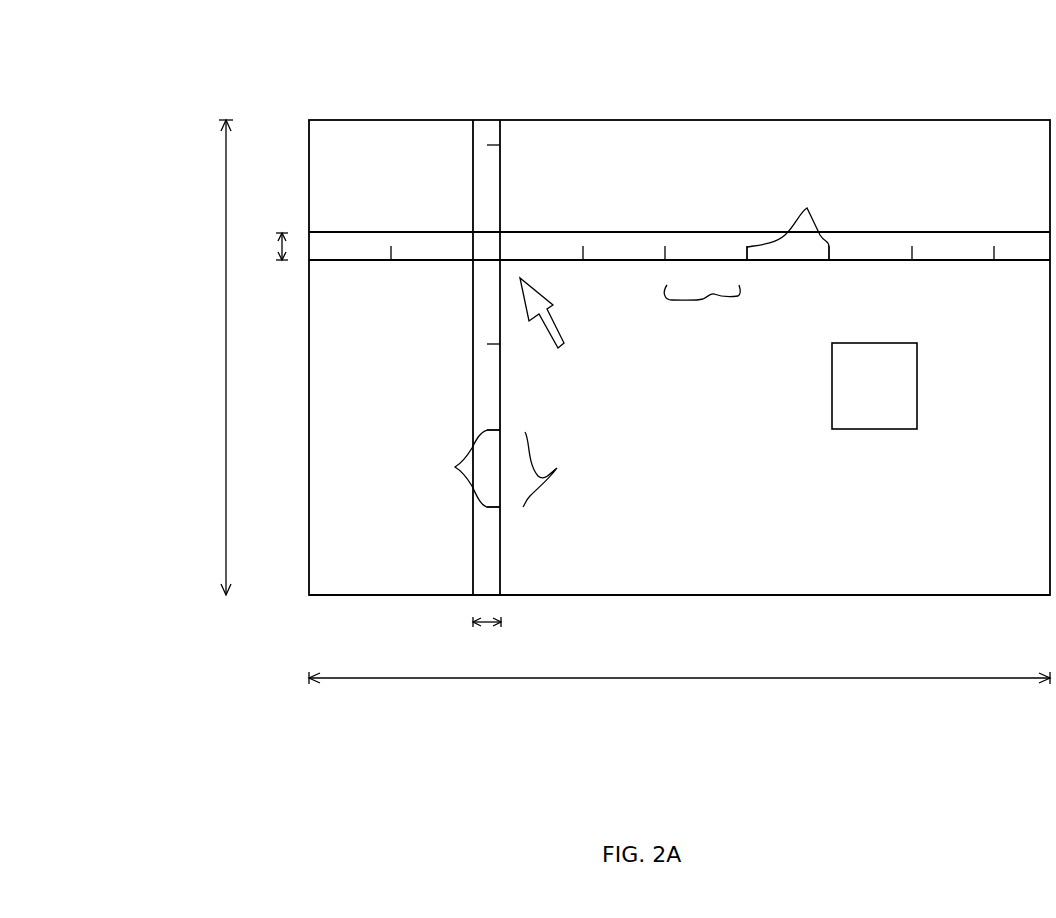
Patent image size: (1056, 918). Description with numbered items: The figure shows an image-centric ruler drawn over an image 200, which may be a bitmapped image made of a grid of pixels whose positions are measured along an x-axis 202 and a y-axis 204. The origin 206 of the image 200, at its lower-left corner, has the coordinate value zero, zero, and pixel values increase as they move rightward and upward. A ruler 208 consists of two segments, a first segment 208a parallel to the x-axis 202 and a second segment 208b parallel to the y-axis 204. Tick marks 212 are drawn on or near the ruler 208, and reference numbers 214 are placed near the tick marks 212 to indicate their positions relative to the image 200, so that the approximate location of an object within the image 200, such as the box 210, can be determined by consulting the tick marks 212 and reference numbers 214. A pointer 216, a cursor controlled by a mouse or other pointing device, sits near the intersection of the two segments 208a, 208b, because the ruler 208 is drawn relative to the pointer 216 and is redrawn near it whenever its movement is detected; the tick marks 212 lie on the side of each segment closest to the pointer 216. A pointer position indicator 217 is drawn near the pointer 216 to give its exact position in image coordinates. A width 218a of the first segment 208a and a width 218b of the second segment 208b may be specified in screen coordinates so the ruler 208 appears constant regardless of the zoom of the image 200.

The image 200 is at (852, 56).
The x-axis 202 is at (623, 678).
The y-axis 204 is at (226, 348).
The origin 206 is at (309, 596).
The ruler 208 is at (452, 222).
The first segment 208a is at (598, 232).
The second segment 208b is at (500, 558).
The box 210 is at (917, 400).
The tick marks 212 is at (628, 349).
The reference numbers 214 is at (631, 396).
The pointer 216 is at (549, 321).
The pointer position indicator 217 is at (582, 367).
The width of the first segment 218a is at (480, 628).
The width of the second segment 218b is at (282, 245).